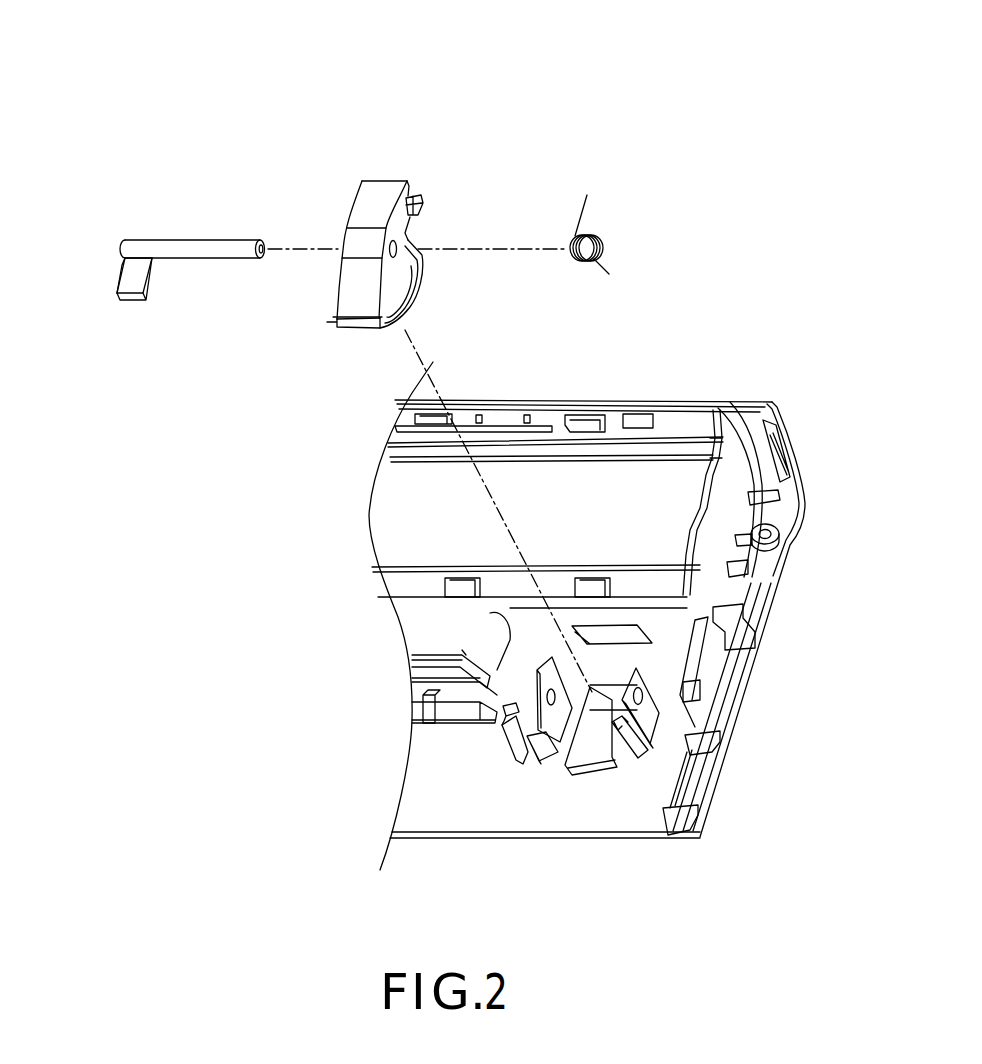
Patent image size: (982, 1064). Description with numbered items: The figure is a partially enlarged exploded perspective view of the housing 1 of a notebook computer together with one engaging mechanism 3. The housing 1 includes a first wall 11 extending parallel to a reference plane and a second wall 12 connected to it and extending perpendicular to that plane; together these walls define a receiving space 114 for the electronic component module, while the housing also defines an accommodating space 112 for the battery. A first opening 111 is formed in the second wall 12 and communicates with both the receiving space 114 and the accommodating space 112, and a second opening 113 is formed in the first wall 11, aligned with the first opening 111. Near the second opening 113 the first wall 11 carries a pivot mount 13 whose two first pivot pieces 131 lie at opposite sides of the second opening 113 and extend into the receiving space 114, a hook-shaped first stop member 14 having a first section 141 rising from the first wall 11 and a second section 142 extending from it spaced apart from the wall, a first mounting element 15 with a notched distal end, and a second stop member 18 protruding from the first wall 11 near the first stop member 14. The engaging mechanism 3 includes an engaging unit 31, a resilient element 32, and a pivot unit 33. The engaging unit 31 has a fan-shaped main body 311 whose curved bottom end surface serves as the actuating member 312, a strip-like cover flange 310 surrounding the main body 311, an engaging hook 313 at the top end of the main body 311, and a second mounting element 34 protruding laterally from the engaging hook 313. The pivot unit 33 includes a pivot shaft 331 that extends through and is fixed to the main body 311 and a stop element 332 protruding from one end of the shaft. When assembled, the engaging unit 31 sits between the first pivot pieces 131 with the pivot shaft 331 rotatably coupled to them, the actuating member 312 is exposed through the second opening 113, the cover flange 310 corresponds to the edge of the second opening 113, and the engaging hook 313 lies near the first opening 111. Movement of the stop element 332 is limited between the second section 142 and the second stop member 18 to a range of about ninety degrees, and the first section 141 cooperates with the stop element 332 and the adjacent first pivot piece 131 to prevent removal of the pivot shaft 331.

The housing 1 is at (803, 425).
The first wall 11 is at (540, 813).
The first opening 111 is at (632, 634).
The accommodating space 112 is at (553, 462).
The second opening 113 is at (600, 762).
The receiving space 114 is at (568, 801).
The second wall 12 is at (680, 643).
The pivot mount 13 is at (656, 741).
The first pivot piece 131 is at (546, 670).
The first stop member 14 is at (470, 707).
The first section 141 is at (512, 737).
The second section 142 is at (508, 710).
The first mounting element 15 is at (636, 758).
The second stop member 18 is at (540, 758).
The engaging mechanism 3 is at (277, 157).
The engaging unit 31 is at (377, 207).
The cover flange 310 is at (334, 320).
The main body 311 is at (400, 272).
The actuating member 312 is at (413, 307).
The engaging hook 313 is at (388, 192).
The resilient element 32 is at (603, 229).
The pivot unit 33 is at (152, 243).
The pivot shaft 331 is at (202, 254).
The stop element 332 is at (125, 282).
The second mounting element 34 is at (424, 205).